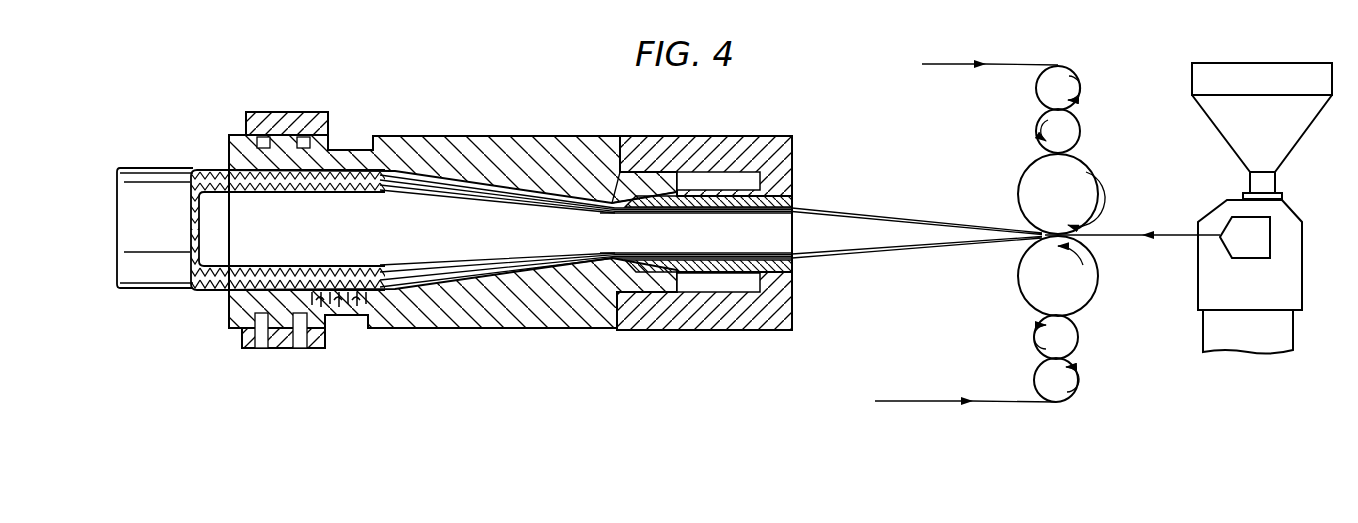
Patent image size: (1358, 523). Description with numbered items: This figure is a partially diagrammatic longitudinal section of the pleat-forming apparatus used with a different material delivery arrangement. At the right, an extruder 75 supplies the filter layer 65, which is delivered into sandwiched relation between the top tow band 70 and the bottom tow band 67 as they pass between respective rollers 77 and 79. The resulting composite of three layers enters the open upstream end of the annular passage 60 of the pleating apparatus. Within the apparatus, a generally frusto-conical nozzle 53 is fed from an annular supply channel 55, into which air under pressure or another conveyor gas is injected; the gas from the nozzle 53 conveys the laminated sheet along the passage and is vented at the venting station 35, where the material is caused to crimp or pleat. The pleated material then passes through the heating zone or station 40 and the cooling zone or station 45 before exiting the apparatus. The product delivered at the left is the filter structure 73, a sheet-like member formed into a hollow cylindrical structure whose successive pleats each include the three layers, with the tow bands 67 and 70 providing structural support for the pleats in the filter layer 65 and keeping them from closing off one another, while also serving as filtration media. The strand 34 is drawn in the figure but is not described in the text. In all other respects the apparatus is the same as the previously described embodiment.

The fiber strands 34 is at (490, 279).
The venting station 35 is at (357, 340).
The heating zone or station 40 is at (300, 360).
The cooling zone or station 45 is at (262, 352).
The frusto-conical nozzle 53 is at (653, 193).
The annular supply channel 55 is at (737, 178).
The annular passage 60 is at (768, 263).
The sheet of filter material 65 is at (1168, 240).
The bottom tow band 67 is at (937, 404).
The top tow band 70 is at (945, 63).
The filter structure 73 is at (155, 282).
The extruder 75 is at (1285, 296).
The roller 77 is at (1083, 185).
The roller 79 is at (1082, 290).